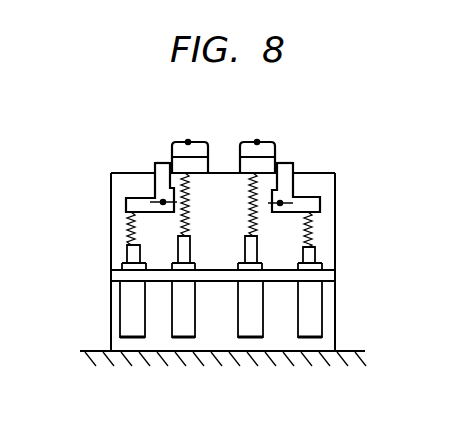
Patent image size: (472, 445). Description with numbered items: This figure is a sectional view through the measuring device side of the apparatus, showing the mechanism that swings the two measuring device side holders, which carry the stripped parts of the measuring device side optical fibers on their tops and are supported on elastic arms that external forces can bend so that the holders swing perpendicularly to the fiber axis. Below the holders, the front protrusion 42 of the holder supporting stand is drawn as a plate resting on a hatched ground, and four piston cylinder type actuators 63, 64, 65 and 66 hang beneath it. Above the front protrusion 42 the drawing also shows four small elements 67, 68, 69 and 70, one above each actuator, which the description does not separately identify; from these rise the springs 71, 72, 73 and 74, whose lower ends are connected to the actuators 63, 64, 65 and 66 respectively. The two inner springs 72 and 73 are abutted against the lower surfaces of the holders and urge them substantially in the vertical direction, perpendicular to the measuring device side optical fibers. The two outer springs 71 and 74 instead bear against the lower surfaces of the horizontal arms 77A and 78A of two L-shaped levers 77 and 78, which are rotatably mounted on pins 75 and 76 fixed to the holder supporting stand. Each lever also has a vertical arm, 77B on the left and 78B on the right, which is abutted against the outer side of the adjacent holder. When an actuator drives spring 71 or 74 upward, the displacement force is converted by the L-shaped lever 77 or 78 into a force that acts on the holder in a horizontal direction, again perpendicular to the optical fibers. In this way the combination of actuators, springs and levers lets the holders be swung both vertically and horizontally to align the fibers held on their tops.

The front protrusion 42 is at (112, 277).
The piston cylinder type actuator 63 is at (132, 338).
The piston cylinder type actuator 64 is at (184, 338).
The piston cylinder type actuator 65 is at (250, 338).
The piston cylinder type actuator 66 is at (310, 338).
The guide pin 67 is at (127, 253).
The guide pin 68 is at (190, 250).
The guide pin 69 is at (257, 252).
The guide pin 70 is at (315, 258).
The spring 71 is at (131, 224).
The spring 72 is at (190, 203).
The spring 73 is at (249, 193).
The spring 74 is at (310, 243).
The pin 75 is at (162, 201).
The pin 76 is at (280, 202).
The L-shaped lever 77 is at (127, 199).
The horizontal arm 77A is at (126, 201).
The vertical arm 77B is at (162, 164).
The L-shaped lever 78 is at (302, 198).
The horizontal arm 78A is at (316, 199).
The vertical arm 78B is at (296, 170).